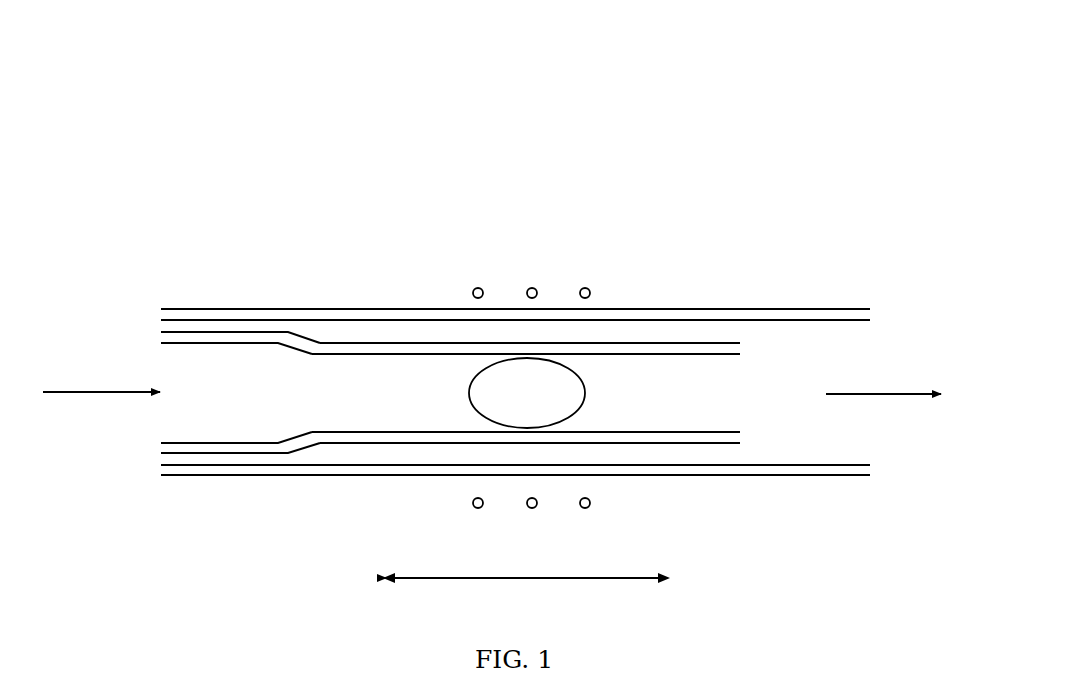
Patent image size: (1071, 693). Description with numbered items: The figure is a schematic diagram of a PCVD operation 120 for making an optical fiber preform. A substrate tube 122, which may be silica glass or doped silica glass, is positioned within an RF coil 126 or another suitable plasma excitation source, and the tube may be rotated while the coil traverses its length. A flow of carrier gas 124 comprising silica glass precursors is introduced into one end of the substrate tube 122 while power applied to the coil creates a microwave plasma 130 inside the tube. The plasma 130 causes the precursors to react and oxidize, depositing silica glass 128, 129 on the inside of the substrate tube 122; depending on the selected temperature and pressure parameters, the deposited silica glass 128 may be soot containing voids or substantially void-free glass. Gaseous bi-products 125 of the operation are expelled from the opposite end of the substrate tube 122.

The PCVD operation 120 is at (345, 127).
The substrate tube 122 is at (331, 306).
The flow of carrier gas 124 is at (90, 388).
The gaseous bi-products 125 is at (918, 390).
The RF coil 126 is at (537, 277).
The silica glass 128 is at (627, 335).
The silica glass 129 is at (342, 428).
The plasma 130 is at (505, 405).